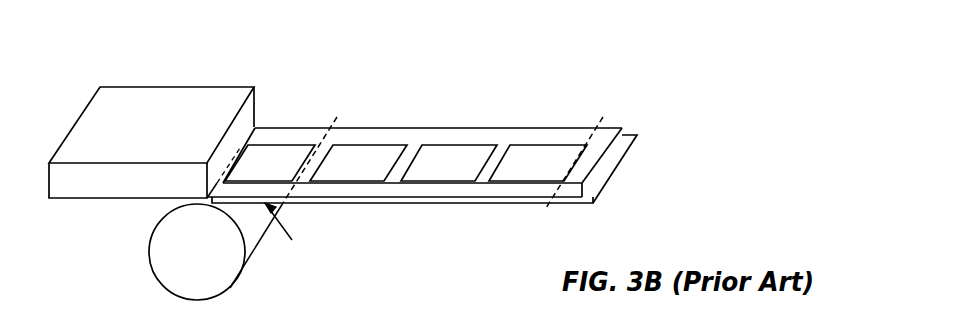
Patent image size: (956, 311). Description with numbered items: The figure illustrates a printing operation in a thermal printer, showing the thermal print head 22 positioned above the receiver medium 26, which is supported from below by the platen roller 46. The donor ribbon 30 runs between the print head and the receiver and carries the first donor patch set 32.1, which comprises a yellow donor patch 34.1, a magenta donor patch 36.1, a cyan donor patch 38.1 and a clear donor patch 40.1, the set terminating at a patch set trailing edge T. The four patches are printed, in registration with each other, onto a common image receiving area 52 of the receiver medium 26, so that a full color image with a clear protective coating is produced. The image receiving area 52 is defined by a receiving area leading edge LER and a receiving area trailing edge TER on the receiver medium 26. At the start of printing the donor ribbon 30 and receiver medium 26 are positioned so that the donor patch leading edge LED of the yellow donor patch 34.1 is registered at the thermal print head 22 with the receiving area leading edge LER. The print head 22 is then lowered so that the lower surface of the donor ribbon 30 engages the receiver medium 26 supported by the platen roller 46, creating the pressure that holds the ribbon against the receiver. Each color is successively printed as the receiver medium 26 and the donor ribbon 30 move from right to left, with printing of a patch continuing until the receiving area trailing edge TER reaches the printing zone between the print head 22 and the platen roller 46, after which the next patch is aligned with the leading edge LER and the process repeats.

The thermal print head 22 is at (100, 123).
The receiver medium 26 is at (430, 205).
The donor ribbon 30 is at (570, 190).
The first donor patch set 32.1 is at (608, 72).
The yellow donor patch 34.1 is at (283, 145).
The magenta donor patch 36.1 is at (360, 145).
The cyan donor patch 38.1 is at (458, 145).
The clear donor patch 40.1 is at (548, 145).
The platen roller 46 is at (230, 262).
The image receiving area 52 is at (292, 240).
The donor patch leading edge LED is at (260, 120).
The receiving area leading edge LER is at (207, 203).
The receiving area trailing edge TER is at (285, 204).
The patch set trailing edge T is at (545, 209).